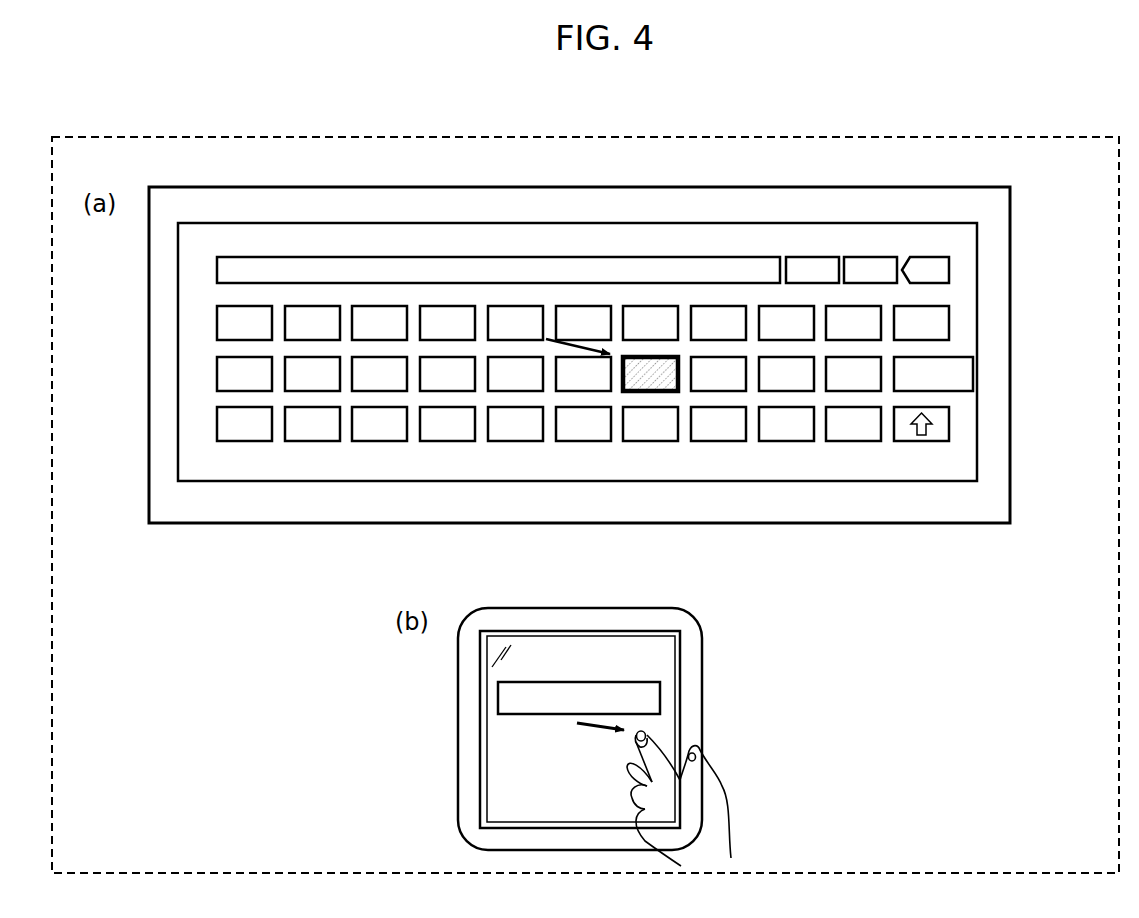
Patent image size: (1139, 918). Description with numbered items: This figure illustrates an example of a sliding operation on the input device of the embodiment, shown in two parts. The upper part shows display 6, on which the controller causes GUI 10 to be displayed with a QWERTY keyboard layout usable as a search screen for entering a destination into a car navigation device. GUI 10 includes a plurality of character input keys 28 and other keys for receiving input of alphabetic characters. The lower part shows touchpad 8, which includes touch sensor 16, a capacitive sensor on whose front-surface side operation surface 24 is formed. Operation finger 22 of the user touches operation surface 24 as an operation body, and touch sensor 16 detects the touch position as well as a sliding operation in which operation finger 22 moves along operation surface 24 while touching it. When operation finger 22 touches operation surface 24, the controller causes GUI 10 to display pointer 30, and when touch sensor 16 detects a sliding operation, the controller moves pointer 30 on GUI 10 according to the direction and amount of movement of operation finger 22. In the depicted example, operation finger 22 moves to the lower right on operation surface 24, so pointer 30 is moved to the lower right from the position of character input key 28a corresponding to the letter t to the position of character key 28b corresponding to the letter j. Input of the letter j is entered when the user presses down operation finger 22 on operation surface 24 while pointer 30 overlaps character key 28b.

The display 6 is at (1010, 230).
The GUI 10 is at (902, 211).
The character input keys 28 is at (217, 423).
The character input key 28a is at (500, 306).
The character key 28b is at (677, 393).
The pointer 30 is at (525, 306).
The touchpad 8 is at (704, 698).
The touch sensor 16 is at (660, 667).
The operation surface 24 is at (505, 733).
The operation finger 22 is at (636, 739).